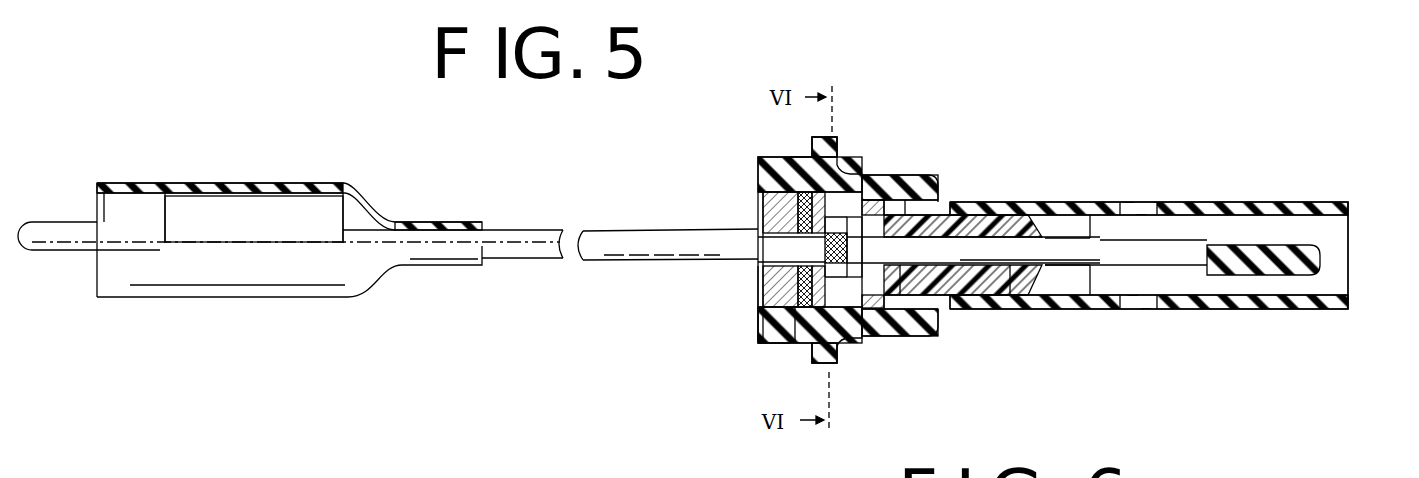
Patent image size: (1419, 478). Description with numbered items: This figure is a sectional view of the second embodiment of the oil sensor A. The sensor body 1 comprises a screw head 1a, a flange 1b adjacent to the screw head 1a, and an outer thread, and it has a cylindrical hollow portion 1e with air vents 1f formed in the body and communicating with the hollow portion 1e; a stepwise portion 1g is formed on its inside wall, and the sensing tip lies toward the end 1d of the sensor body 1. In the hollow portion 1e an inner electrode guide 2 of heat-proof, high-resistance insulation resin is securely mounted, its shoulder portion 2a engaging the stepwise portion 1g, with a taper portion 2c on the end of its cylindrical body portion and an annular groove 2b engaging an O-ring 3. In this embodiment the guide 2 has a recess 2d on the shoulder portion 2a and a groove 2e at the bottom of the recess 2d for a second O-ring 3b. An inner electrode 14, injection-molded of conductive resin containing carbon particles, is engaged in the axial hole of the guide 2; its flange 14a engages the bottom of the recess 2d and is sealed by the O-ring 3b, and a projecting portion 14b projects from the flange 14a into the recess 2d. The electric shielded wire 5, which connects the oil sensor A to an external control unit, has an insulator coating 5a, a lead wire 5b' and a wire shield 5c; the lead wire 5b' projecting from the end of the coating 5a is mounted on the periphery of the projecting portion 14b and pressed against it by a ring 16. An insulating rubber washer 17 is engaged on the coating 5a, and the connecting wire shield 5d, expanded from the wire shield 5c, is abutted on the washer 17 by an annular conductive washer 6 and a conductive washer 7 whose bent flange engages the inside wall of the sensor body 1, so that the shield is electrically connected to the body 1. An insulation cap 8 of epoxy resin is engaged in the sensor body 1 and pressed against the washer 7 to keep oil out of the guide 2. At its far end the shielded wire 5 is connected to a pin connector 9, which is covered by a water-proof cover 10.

The sensor body 1 is at (990, 202).
The screw head 1a is at (762, 345).
The flange 1b is at (822, 363).
The end of sensor body 1d is at (1350, 253).
The cylindrical hollow portion 1e is at (1060, 228).
The air vents 1f is at (1135, 210).
The stepwise portion 1g is at (903, 176).
The inner electrode guide 2 is at (948, 296).
The shoulder portion 2a is at (872, 178).
The annular groove 2b is at (900, 297).
The taper portion 2c is at (1028, 297).
The recess 2d is at (857, 290).
The groove 2e is at (876, 296).
The O-ring 3 is at (942, 190).
The O-ring 3b is at (957, 205).
The electric shielded wire 5 is at (620, 261).
The insulator coating 5a is at (762, 214).
The lead wire 5b' is at (756, 351).
The wire shield 5c is at (663, 258).
The connecting wire shield 5d is at (808, 156).
The annular conductive washer 6 is at (800, 325).
The conductive washer 7 is at (772, 162).
The insulation cap 8 is at (757, 287).
The pin connector 9 is at (278, 205).
The water-proof cover 10 is at (236, 285).
The inner electrode 14 is at (1073, 266).
The flange 14a is at (868, 300).
The projecting portion 14b is at (812, 157).
The ring 16 is at (851, 182).
The insulating washer 17 is at (838, 300).
The oil sensor A is at (1182, 185).